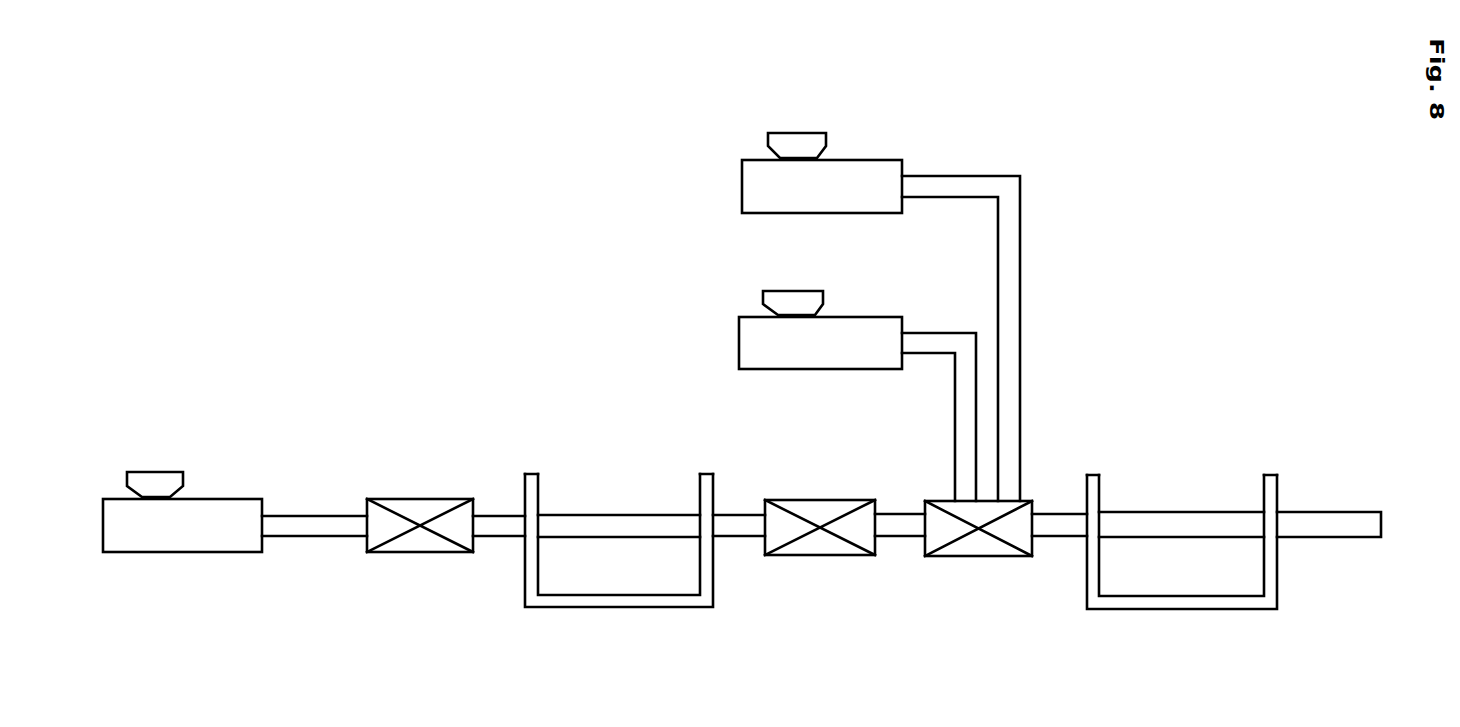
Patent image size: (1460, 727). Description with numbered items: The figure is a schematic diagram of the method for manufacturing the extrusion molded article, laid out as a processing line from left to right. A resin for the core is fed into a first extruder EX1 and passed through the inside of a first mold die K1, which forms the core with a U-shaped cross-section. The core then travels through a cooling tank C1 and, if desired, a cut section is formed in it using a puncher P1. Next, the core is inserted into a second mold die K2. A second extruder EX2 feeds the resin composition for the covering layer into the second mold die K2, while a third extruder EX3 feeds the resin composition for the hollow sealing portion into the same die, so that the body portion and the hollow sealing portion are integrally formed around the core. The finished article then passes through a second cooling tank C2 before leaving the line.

The first extruder EX1 is at (182, 539).
The second extruder EX2 is at (881, 317).
The third extruder EX3 is at (857, 396).
The first mold die K1 is at (420, 552).
The second mold die K2 is at (978, 544).
The puncher P1 is at (820, 541).
The cooling tank C1 is at (619, 558).
The cooling tank C2 is at (1182, 559).